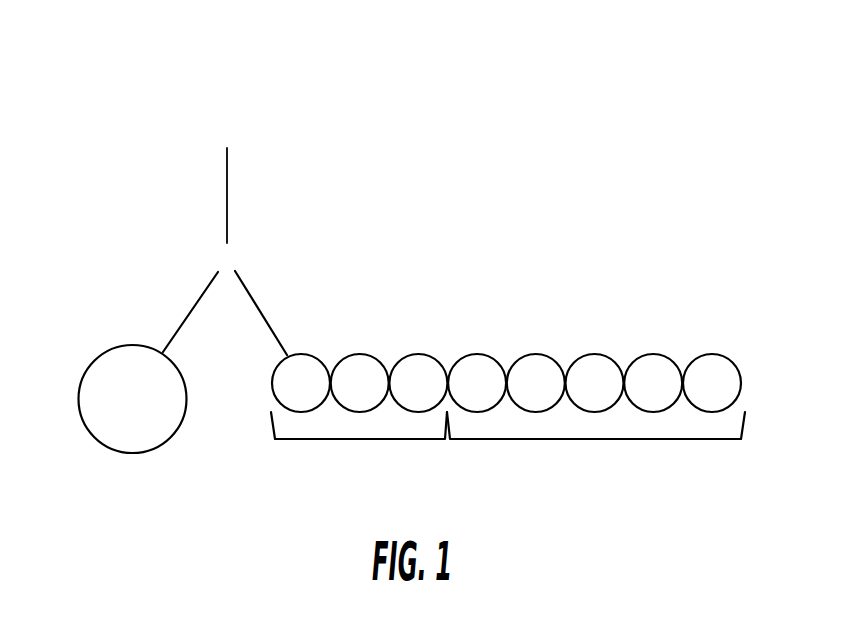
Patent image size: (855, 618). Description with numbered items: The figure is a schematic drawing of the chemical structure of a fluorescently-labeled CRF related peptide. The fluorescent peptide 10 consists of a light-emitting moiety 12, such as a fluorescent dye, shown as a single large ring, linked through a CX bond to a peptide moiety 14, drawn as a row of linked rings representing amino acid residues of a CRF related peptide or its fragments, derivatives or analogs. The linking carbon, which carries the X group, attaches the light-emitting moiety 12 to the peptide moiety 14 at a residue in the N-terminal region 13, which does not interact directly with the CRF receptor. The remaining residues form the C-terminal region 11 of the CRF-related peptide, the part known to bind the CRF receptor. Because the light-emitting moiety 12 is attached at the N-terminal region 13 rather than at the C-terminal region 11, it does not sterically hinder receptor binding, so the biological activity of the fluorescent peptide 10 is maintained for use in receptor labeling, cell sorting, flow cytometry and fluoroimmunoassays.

The fluorescent peptide 10 is at (548, 42).
The C-terminal region of CRF-related peptide 11 is at (590, 480).
The light-emitting moiety 12 is at (101, 326).
The N-terminal region 13 is at (354, 473).
The peptide moiety 14 is at (593, 238).